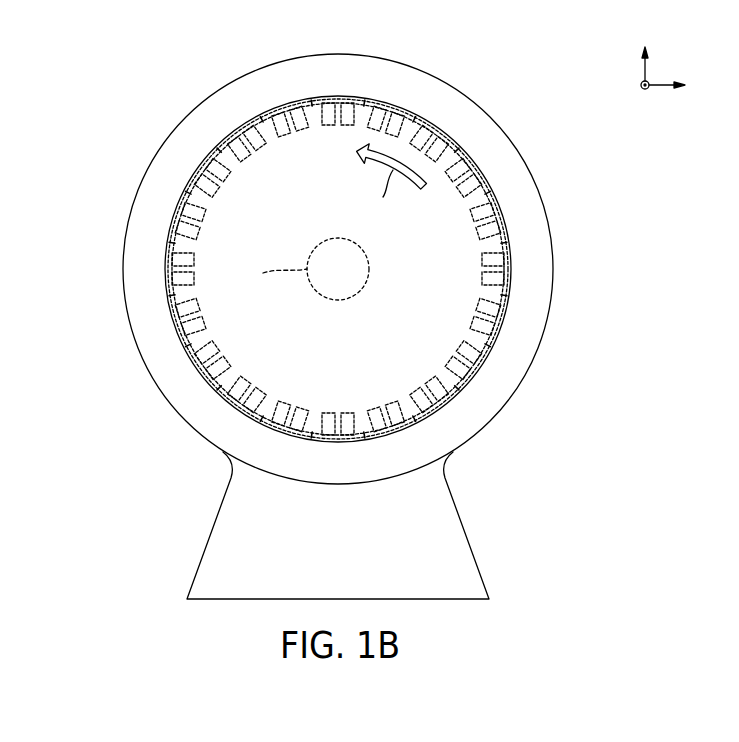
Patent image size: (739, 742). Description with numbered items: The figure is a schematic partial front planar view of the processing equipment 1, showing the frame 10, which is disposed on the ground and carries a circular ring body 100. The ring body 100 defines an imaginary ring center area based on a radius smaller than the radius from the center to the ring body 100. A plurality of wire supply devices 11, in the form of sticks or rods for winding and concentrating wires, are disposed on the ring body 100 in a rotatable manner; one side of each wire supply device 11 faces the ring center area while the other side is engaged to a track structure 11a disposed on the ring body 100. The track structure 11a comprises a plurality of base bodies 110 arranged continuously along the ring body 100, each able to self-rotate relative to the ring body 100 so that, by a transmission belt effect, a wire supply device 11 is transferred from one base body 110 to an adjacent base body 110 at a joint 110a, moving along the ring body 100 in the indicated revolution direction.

The processing equipment 1 is at (73, 56).
The frame 10 is at (468, 550).
The ring body 100 is at (482, 410).
The wire supply device 11 is at (493, 262).
The track structure 11a is at (478, 173).
The base body 110 is at (503, 215).
The joint between core segments 110a is at (505, 297).